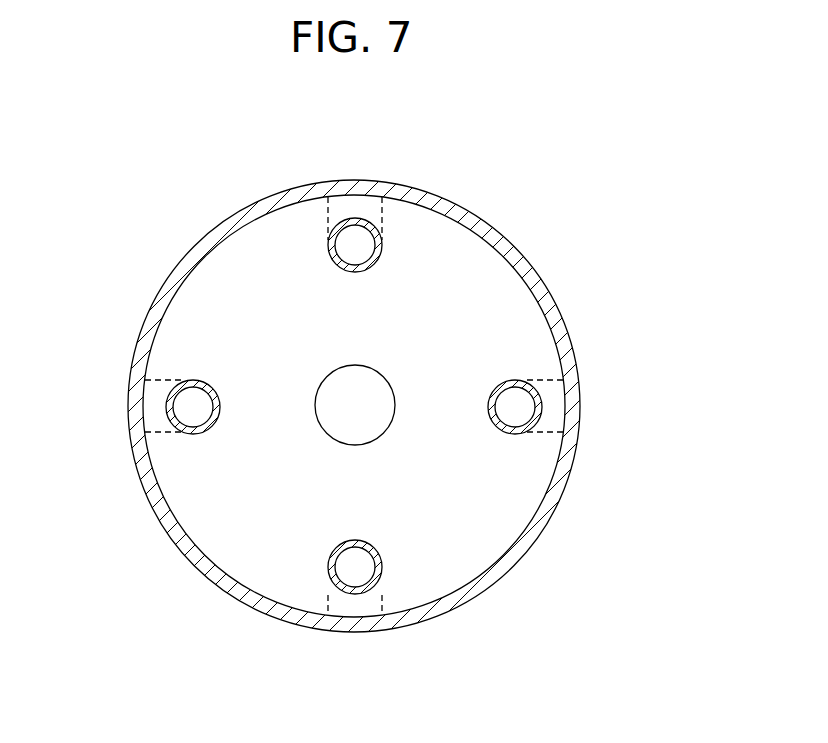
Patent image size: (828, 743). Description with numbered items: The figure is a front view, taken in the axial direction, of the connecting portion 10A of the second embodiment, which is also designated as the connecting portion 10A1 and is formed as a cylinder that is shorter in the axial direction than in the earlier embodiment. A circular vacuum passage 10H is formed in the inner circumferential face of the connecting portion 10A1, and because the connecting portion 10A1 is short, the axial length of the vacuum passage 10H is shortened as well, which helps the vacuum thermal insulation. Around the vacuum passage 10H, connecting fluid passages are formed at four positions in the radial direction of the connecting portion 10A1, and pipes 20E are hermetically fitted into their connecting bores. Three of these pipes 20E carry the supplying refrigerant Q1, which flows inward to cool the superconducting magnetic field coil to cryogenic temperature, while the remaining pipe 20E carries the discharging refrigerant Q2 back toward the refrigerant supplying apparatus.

The connecting portion 10A is at (500, 515).
The connecting portion 10A1 is at (537, 332).
The vacuum passage 10H is at (382, 418).
The first pipe 20E is at (496, 388).
The supplying refrigerant Q1 is at (355, 168).
The discharging refrigerant Q2 is at (355, 645).